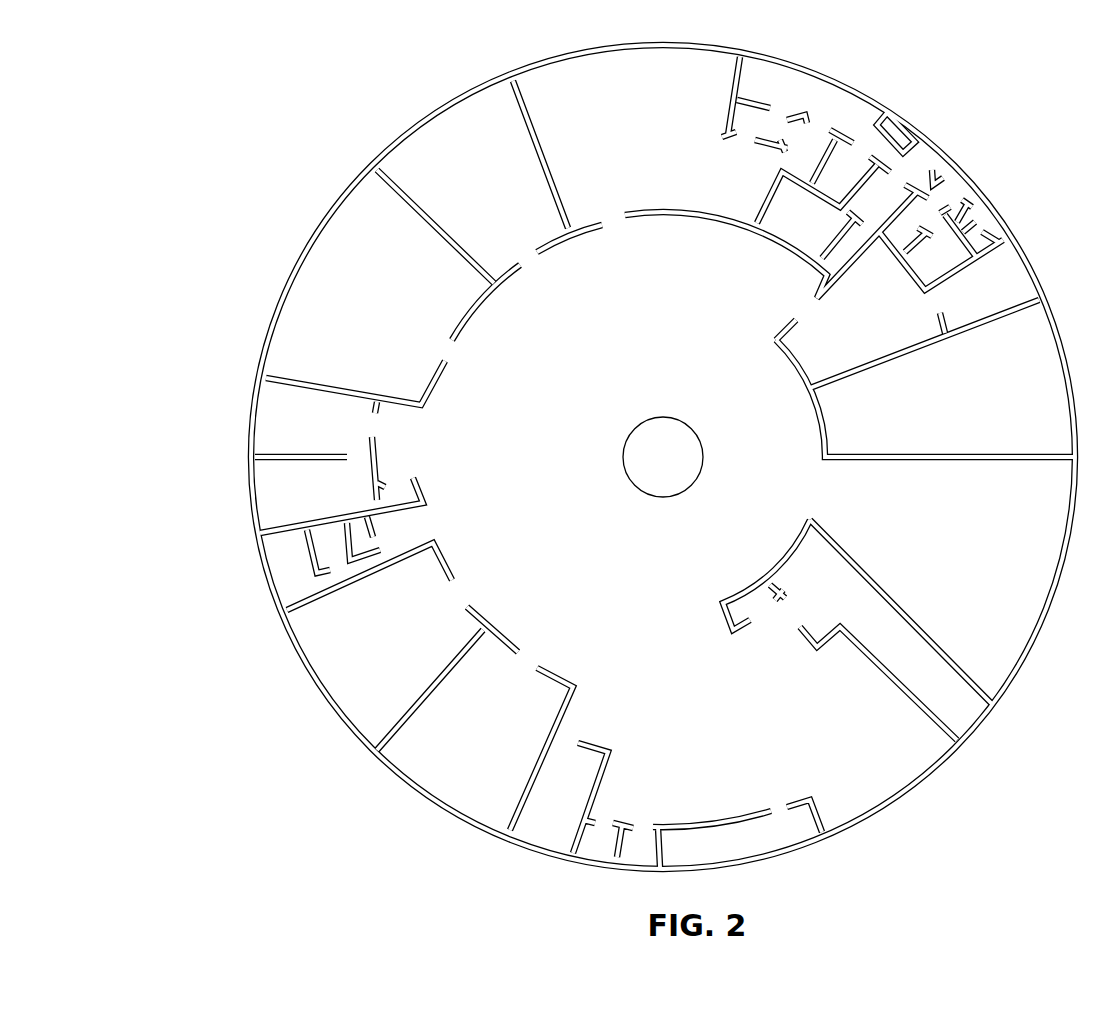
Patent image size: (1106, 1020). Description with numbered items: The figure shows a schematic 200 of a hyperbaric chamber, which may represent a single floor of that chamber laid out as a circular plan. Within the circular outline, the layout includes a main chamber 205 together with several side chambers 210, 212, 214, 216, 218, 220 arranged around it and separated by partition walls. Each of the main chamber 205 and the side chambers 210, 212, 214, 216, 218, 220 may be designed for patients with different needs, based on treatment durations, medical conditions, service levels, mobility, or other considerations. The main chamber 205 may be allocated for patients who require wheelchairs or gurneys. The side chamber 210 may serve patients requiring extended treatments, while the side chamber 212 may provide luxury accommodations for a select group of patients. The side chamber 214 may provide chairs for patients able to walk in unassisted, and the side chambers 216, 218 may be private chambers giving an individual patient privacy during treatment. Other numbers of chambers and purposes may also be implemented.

The schematic 200 is at (205, 58).
The main chamber 205 is at (793, 478).
The side chamber 210 is at (545, 50).
The side chamber 212 is at (415, 120).
The side chamber 214 is at (285, 283).
The side chamber 216 is at (318, 688).
The side chamber 218 is at (438, 810).
The side chamber 220 is at (897, 798).